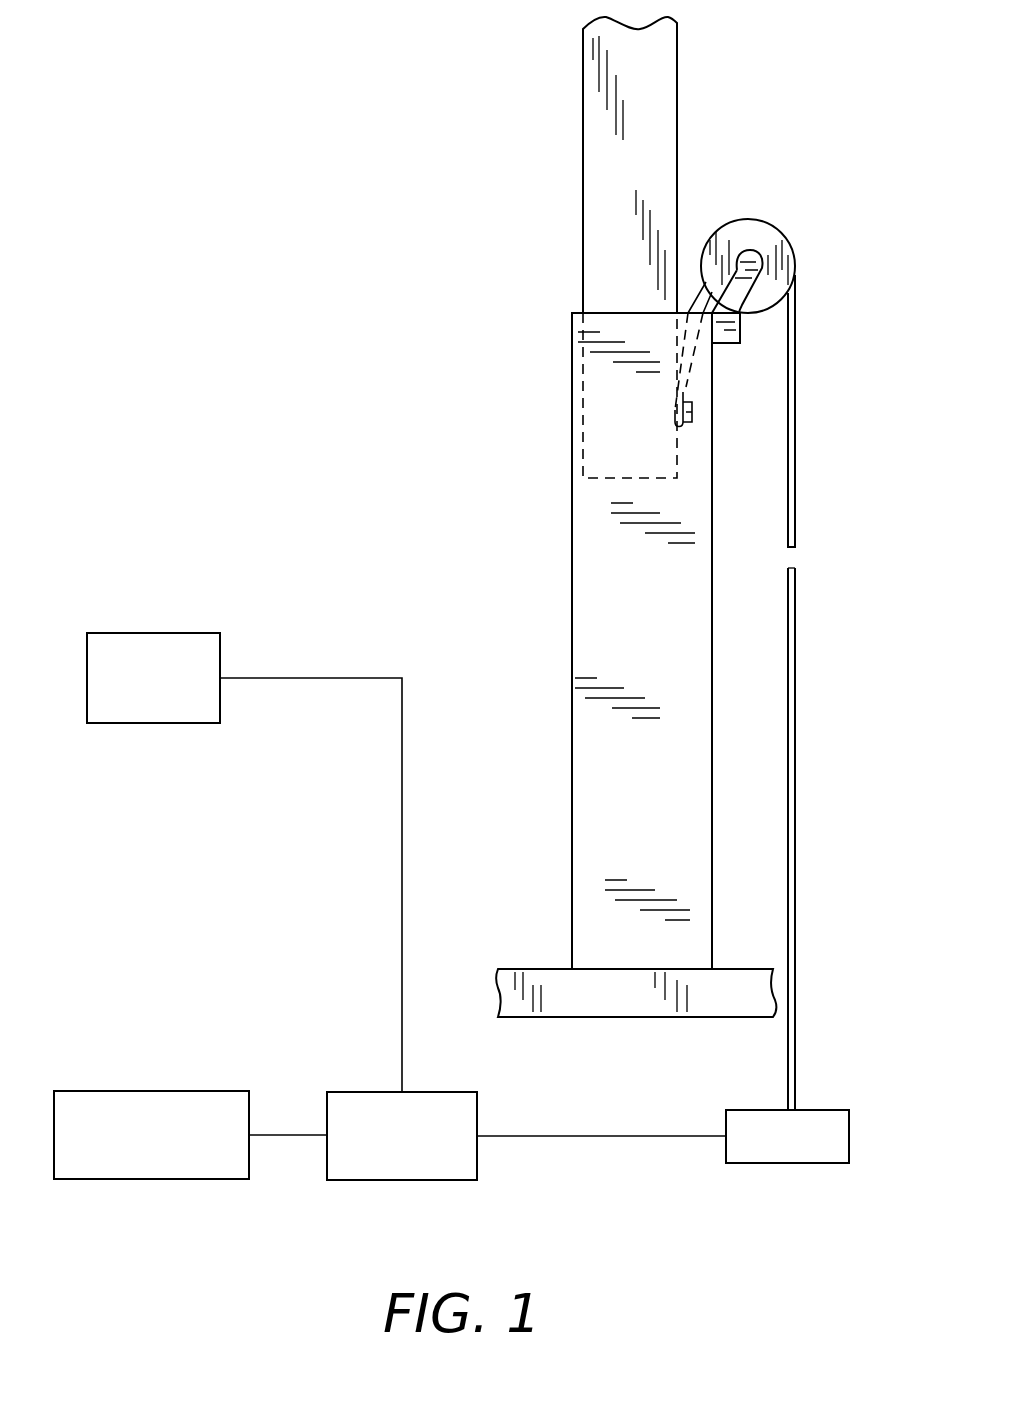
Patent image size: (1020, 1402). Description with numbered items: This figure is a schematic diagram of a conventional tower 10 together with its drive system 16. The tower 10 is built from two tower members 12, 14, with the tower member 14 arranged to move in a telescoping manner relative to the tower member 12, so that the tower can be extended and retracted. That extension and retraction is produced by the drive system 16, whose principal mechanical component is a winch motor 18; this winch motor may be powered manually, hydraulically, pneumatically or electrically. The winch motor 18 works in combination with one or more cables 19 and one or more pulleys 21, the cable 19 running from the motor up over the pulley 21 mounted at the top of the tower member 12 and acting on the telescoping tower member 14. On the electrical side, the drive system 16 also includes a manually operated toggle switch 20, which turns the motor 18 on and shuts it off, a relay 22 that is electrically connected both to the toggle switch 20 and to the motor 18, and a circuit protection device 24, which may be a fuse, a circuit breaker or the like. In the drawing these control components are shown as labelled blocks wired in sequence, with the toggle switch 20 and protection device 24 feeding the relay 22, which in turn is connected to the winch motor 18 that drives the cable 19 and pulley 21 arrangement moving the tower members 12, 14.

The conventional tower 10 is at (773, 157).
The tower member 12 is at (572, 586).
The tower member 14 is at (606, 130).
The drive system 16 is at (297, 1197).
The winch motor 18 is at (816, 1118).
The cable 19 is at (796, 453).
The toggle switch 20 is at (158, 640).
The pulley 21 is at (772, 243).
The relay 22 is at (436, 1100).
The circuit protection device 24 is at (197, 1097).